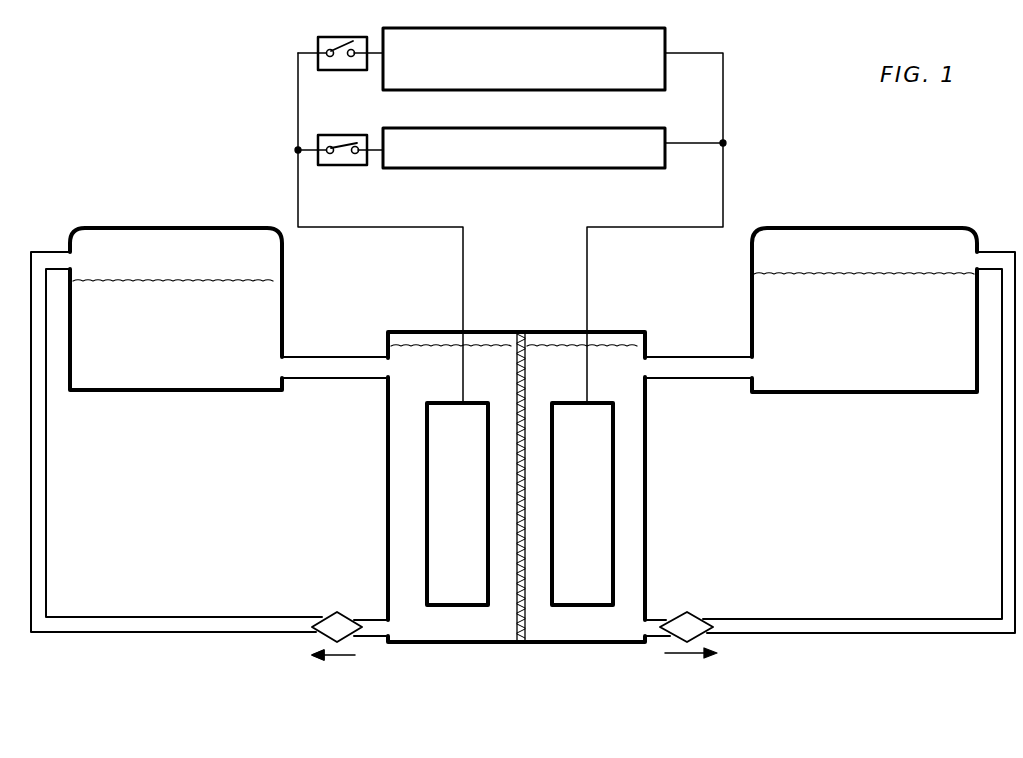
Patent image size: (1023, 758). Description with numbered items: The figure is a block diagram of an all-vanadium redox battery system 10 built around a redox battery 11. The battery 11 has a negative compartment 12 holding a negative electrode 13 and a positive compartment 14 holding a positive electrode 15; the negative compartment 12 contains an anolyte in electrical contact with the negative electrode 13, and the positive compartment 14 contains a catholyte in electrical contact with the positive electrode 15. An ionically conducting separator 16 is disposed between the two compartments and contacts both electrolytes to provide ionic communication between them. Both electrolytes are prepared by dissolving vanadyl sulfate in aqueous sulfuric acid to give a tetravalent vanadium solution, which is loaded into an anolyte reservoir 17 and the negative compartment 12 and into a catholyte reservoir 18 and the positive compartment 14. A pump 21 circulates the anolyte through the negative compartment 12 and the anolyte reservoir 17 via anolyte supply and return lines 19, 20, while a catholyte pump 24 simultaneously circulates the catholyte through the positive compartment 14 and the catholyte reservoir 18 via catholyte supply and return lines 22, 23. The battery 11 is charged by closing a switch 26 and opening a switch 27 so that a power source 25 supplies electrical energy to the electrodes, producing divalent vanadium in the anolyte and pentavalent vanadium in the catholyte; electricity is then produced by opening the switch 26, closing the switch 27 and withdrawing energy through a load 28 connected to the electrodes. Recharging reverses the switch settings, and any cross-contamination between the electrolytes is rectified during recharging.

The all-vanadium redox battery system 10 is at (200, 120).
The redox battery 11 is at (635, 648).
The negative compartment 12 is at (429, 645).
The negative electrode 13 is at (440, 457).
The positive compartment 14 is at (583, 645).
The positive electrode 15 is at (592, 468).
The ionically conducting separator 16 is at (522, 332).
The anolyte reservoir 17 is at (118, 228).
The catholyte reservoir 18 is at (810, 228).
The anolyte supply line 19 is at (298, 357).
The anolyte return line 20 is at (78, 617).
The pump 21 is at (337, 612).
The catholyte supply line 22 is at (685, 358).
The catholyte return line 23 is at (812, 619).
The catholyte pump 24 is at (690, 615).
The power source 25 is at (657, 43).
The switch 26 is at (330, 47).
The switch 27 is at (333, 134).
The load 28 is at (641, 132).